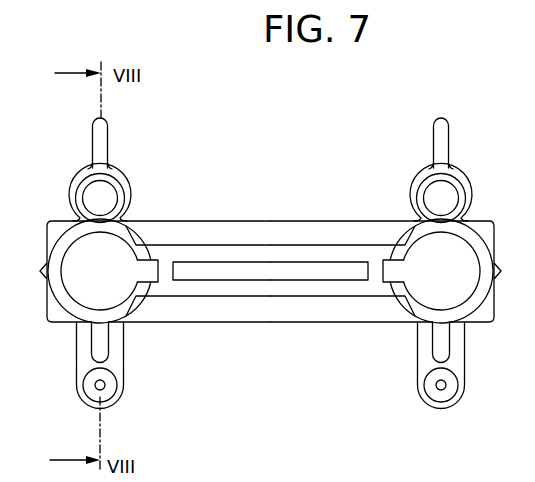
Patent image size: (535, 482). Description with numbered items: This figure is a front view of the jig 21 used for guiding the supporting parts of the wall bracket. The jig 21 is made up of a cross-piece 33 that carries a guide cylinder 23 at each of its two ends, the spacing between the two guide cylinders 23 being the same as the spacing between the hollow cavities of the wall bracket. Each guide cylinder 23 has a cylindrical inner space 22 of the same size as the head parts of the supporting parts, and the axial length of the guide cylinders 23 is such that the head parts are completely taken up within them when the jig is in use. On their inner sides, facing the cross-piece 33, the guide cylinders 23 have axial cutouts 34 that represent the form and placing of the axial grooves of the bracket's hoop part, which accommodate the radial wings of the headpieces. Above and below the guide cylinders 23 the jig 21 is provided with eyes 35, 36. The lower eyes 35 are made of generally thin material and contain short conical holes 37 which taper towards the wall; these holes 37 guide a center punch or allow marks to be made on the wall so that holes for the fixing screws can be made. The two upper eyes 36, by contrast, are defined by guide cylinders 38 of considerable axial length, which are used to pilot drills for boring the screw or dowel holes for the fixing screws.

The jig 21 is at (261, 331).
The cylindrical inner space 22 is at (80, 257).
The guide cylinder 23 is at (134, 306).
The cross-piece 33 is at (310, 308).
The axial cutout 34 is at (156, 268).
The eye 35 is at (114, 362).
The upper eye 36 is at (124, 180).
The conical hole 37 is at (104, 389).
The guide cylinder 38 is at (81, 181).